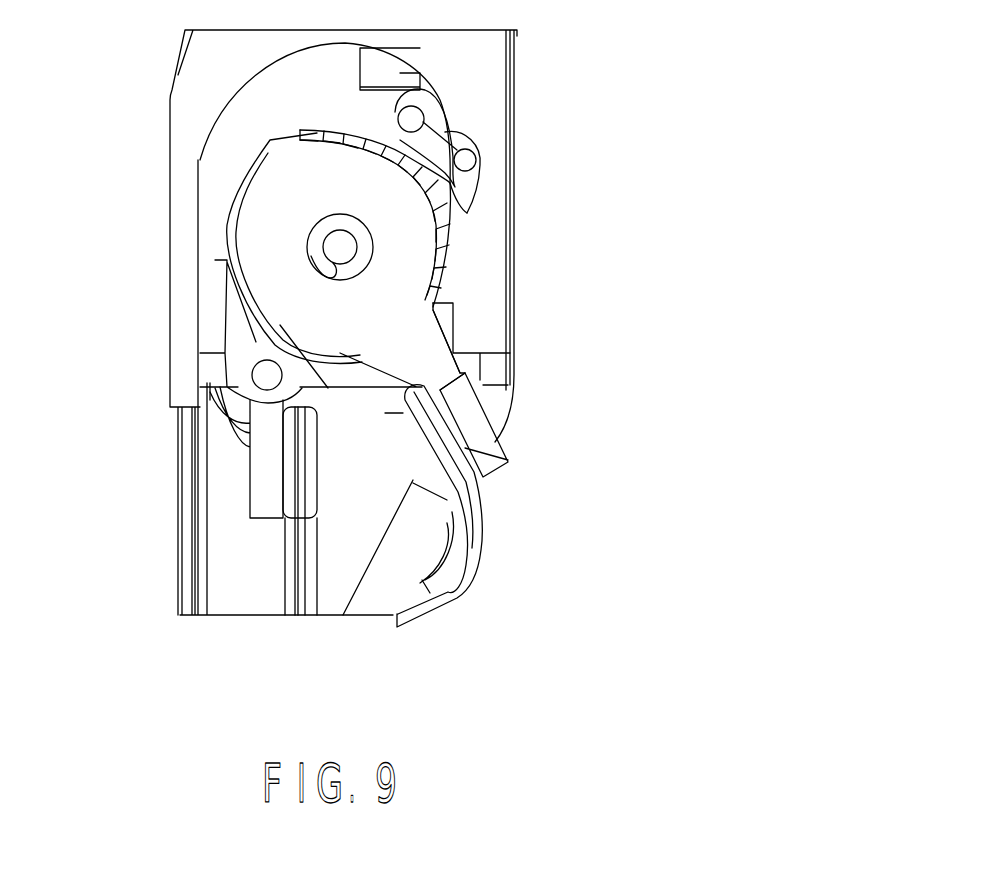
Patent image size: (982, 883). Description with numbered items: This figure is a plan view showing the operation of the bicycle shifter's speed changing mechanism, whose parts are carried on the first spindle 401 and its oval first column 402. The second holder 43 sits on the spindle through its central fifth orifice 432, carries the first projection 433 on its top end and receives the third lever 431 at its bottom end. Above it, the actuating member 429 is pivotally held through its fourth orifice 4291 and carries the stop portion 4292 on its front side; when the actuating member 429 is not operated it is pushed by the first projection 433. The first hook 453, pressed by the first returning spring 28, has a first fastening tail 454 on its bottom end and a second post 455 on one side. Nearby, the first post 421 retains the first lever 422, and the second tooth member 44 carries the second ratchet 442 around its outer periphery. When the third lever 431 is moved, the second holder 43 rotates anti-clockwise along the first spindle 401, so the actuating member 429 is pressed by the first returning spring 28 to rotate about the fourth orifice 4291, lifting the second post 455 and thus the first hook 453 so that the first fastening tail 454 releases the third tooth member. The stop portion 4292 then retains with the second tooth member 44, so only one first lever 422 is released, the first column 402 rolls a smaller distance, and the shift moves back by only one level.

The first returning spring 28 is at (360, 69).
The stop portion 4292 is at (332, 140).
The first projection 433 is at (270, 134).
The first spindle 401 is at (310, 232).
The fifth orifice 432 is at (318, 270).
The first column 402 is at (340, 273).
The first post 421 is at (248, 447).
The first lever 422 is at (283, 570).
The actuating member 429 is at (440, 68).
The first hook 453 is at (440, 107).
The fourth orifice 4291 is at (480, 140).
The second post 455 is at (477, 160).
The first fastening tail 454 is at (467, 213).
The second ratchet 442 is at (450, 242).
The second tooth member 44 is at (453, 283).
The second holder 43 is at (508, 418).
The third lever 431 is at (477, 557).